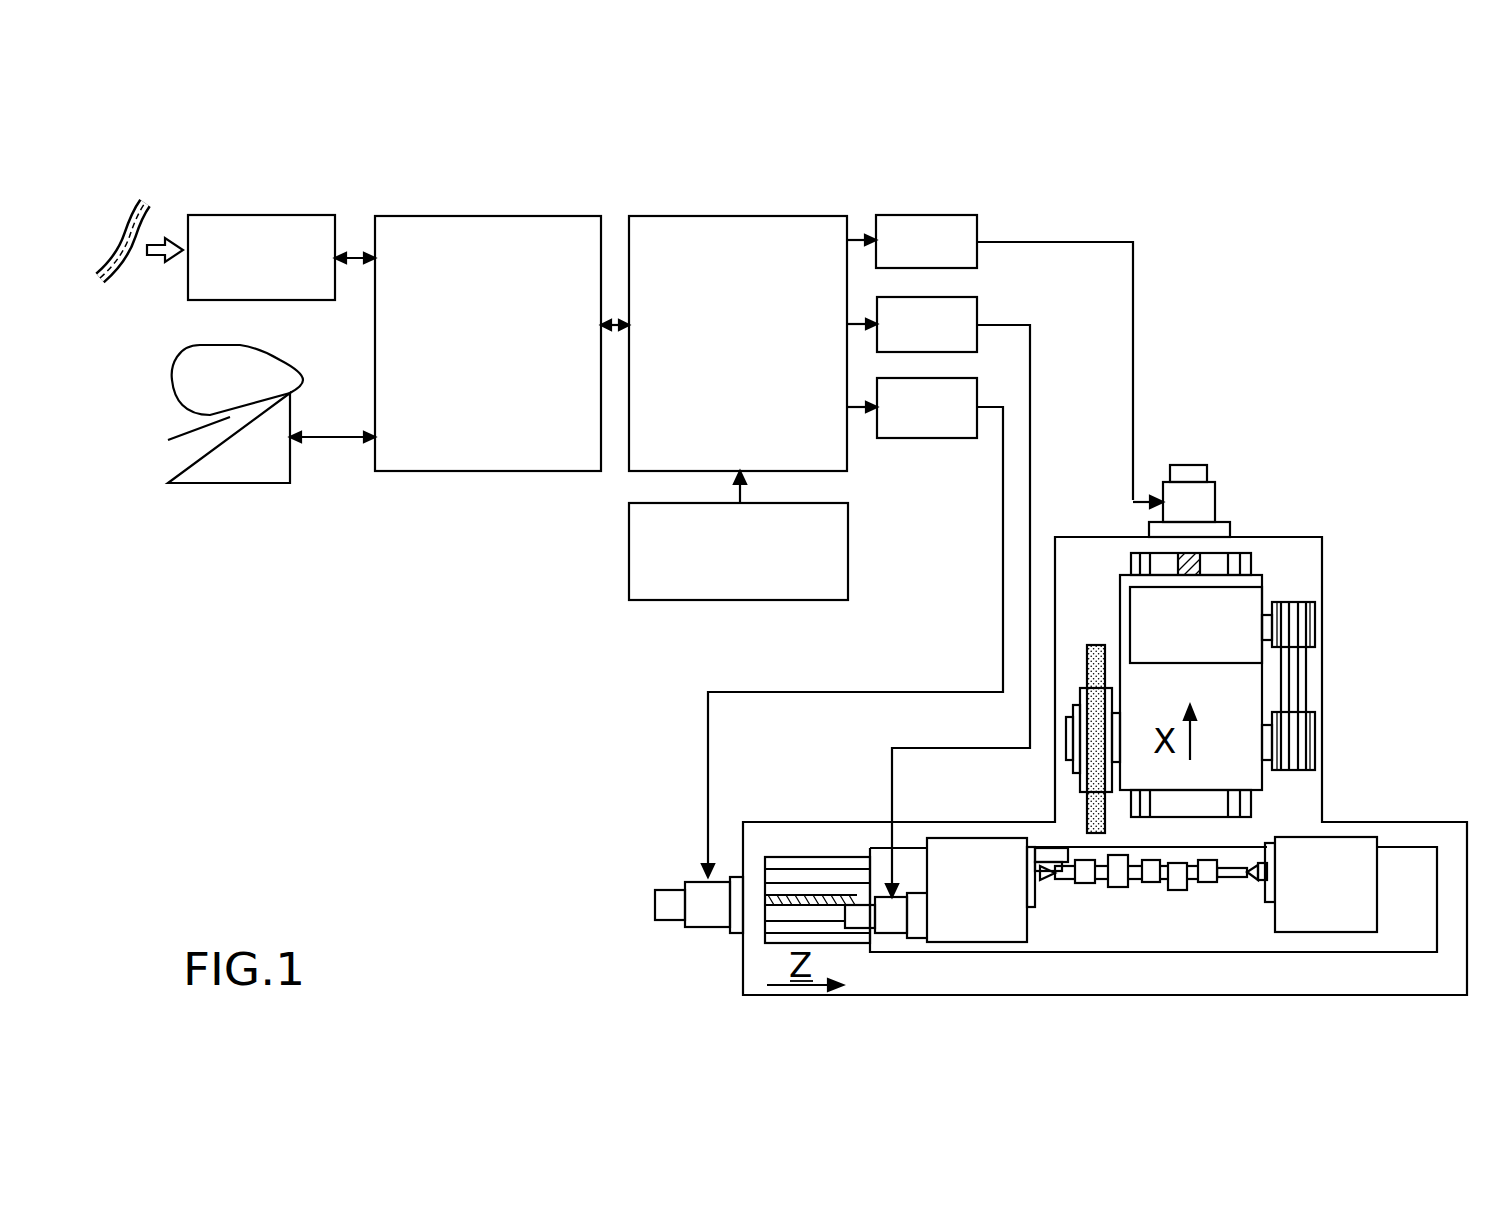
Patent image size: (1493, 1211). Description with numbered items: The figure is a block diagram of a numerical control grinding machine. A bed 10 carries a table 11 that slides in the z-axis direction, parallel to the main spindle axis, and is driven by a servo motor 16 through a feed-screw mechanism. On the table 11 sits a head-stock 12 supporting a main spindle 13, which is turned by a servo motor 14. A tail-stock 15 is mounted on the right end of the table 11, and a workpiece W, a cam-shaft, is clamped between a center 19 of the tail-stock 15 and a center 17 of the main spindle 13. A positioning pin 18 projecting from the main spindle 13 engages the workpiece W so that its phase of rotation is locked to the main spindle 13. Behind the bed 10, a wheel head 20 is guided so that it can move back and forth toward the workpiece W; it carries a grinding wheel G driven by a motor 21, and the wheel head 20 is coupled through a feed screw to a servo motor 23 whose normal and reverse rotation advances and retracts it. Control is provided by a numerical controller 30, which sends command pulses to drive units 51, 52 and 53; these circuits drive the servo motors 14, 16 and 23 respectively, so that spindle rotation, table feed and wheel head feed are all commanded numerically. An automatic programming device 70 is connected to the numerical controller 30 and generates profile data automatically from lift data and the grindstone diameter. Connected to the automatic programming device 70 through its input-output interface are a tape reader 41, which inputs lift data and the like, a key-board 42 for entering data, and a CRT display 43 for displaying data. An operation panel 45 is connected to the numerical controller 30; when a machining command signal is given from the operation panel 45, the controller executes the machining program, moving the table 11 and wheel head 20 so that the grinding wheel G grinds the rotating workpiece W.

The bed 10 is at (1445, 821).
The table 11 is at (1410, 952).
The head-stock 12 is at (977, 940).
The main spindle 13 is at (1033, 907).
The servo motor 14 is at (897, 927).
The tail-stock 15 is at (1322, 932).
The servo motor 16 is at (703, 928).
The center 17 is at (1047, 882).
The positioning pin 18 is at (1047, 843).
The center 19 is at (1253, 880).
The wheel head 20 is at (1262, 778).
The motor 21 is at (1265, 590).
The servo motor 23 is at (1210, 498).
The numerical controller 30 is at (630, 216).
The tape reader 41 is at (191, 215).
The key-board 42 is at (168, 485).
The CRT display 43 is at (195, 343).
The operation panel 45 is at (629, 600).
The drive unit 51 is at (977, 300).
The drive unit 52 is at (987, 369).
The drive unit 53 is at (976, 215).
The automatic programming device 70 is at (376, 216).
The grinding wheel G is at (1087, 820).
The workpiece W is at (1183, 891).